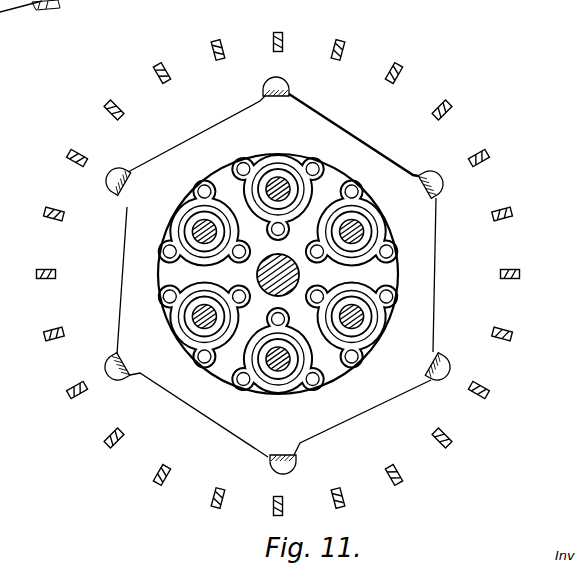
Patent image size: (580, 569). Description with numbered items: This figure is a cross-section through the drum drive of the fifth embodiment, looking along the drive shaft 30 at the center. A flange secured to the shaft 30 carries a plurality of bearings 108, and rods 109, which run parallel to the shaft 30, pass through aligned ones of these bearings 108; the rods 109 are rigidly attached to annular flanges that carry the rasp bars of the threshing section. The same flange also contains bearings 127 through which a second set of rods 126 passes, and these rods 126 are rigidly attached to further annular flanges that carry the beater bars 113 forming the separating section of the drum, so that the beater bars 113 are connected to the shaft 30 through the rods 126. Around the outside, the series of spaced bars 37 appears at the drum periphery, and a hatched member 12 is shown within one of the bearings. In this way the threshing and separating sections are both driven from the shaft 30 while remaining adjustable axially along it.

The shaft 12 is at (366, 232).
The drive shaft 30 is at (300, 273).
The key member 37 is at (492, 332).
The bearings 108 is at (393, 250).
The rods 109 is at (277, 183).
The beater bars 113 is at (433, 379).
The second set of rods 126 is at (378, 221).
The bearings 127 is at (194, 203).